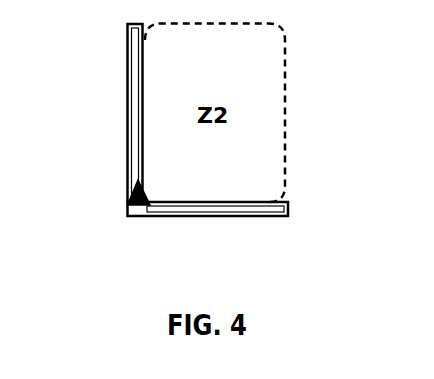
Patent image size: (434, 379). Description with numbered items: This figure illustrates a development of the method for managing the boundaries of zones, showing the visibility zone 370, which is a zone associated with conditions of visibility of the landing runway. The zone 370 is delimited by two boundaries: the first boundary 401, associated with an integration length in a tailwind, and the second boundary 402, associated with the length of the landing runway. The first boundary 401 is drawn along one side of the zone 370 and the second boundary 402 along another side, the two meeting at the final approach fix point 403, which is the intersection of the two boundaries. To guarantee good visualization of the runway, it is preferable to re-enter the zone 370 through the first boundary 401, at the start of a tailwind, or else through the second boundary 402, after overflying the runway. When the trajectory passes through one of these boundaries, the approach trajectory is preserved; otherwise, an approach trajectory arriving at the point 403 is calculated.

The zone Z2 370 is at (277, 27).
The boundary F1 401 is at (127, 124).
The boundary F2 402 is at (215, 219).
The point FAF3 403 is at (126, 206).